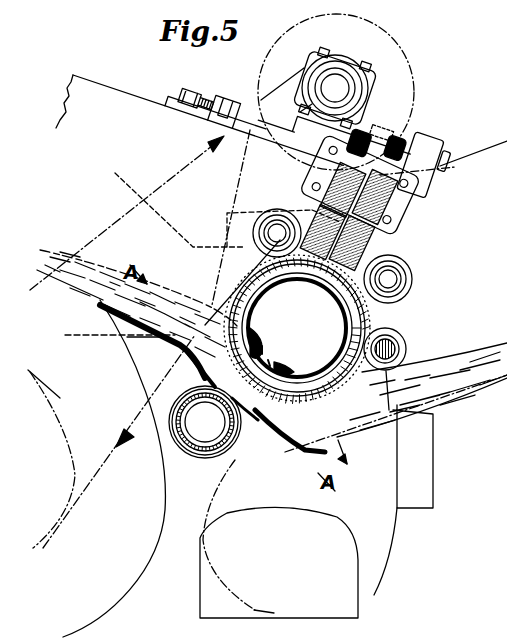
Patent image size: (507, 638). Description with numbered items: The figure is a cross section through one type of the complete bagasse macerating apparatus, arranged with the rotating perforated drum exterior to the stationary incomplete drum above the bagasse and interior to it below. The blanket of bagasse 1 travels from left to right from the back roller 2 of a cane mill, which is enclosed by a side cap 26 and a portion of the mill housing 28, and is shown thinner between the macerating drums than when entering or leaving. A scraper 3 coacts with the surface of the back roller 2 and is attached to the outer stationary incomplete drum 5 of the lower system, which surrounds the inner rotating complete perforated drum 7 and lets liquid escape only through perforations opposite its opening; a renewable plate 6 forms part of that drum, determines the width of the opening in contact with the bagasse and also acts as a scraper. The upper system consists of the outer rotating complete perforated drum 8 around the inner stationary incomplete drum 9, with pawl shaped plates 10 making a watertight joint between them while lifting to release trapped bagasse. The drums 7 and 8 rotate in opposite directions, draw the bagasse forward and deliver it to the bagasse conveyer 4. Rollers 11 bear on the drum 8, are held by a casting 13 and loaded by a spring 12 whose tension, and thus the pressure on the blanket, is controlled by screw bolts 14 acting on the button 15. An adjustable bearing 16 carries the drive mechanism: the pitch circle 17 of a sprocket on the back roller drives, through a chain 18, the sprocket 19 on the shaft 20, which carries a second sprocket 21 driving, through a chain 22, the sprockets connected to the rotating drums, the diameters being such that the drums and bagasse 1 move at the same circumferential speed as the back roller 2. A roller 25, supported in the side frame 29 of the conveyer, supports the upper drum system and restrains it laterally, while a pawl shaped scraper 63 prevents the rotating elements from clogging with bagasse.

The blanket of bagasse 1 is at (53, 247).
The back roller 2 is at (114, 468).
The scraper 3 is at (153, 284).
The bagasse conveyer 4 is at (215, 490).
The outer stationary incomplete drum 5 is at (216, 462).
The renewable plate 6 is at (247, 415).
The inner rotating complete perforated drum 7 is at (205, 422).
The outer rotating complete perforated drum 8 is at (380, 329).
The inner stationary incomplete drum 9 is at (358, 320).
The pawl shaped plates 10 is at (262, 344).
The rollers 11 is at (276, 216).
The spring 12 is at (396, 251).
The casting 13 is at (370, 238).
The screw bolts 14 is at (402, 141).
The button 15 is at (404, 200).
The adjustable bearing 16 is at (286, 100).
The pitch circle of sprocket wheel 17 is at (51, 459).
The chain 18 is at (127, 213).
The sprocket 19 is at (338, 63).
The shaft 20 is at (335, 88).
The second sprocket 21 is at (398, 76).
The chain 22 is at (257, 163).
The roller 25 is at (400, 346).
The side cap 26 is at (353, 480).
The mill housing 28 is at (227, 210).
The side frame 29 is at (473, 164).
The pawl shaped scraper 63 is at (396, 356).